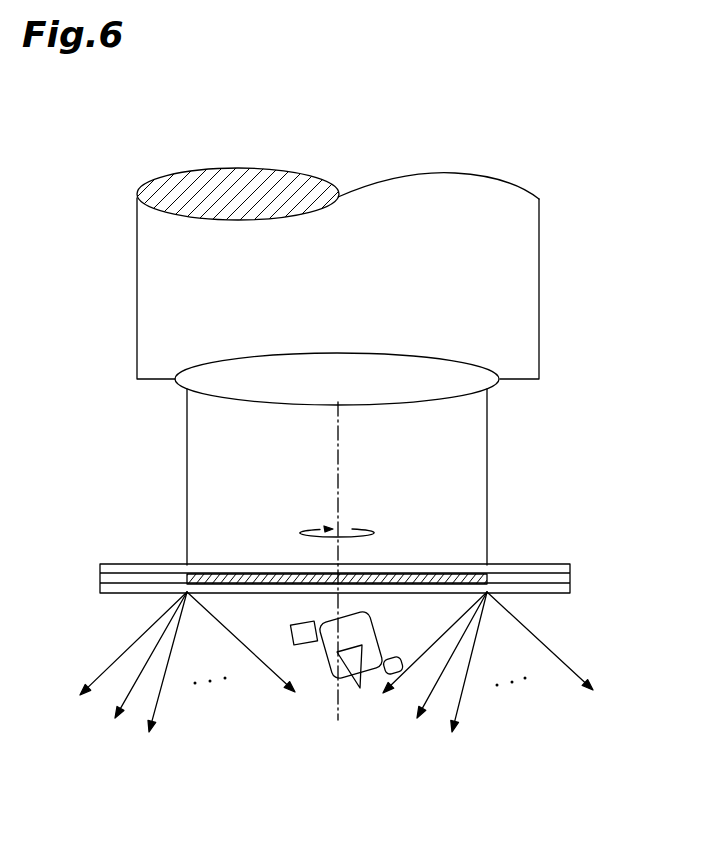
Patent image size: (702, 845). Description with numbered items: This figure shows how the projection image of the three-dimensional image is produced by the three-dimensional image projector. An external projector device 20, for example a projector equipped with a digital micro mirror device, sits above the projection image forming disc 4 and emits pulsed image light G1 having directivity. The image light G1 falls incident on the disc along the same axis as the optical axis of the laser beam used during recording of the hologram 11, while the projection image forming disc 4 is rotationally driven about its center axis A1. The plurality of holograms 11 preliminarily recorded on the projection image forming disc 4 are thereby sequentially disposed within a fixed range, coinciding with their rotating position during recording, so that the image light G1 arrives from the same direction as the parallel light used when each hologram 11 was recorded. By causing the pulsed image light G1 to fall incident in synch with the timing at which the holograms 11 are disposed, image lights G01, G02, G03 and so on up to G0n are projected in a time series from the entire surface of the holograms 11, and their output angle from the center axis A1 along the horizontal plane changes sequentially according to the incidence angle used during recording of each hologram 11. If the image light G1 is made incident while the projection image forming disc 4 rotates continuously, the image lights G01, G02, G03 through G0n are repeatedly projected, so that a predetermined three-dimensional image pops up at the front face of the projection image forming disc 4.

The projector device 20 is at (539, 281).
The image light G1 is at (187, 445).
The center axis A1 is at (338, 453).
The projection image forming disc 4 is at (560, 580).
The hologram 11 is at (495, 575).
The image light G01 is at (98, 687).
The image light G02 is at (127, 705).
The image light G03 is at (158, 717).
The image light G0n is at (273, 683).